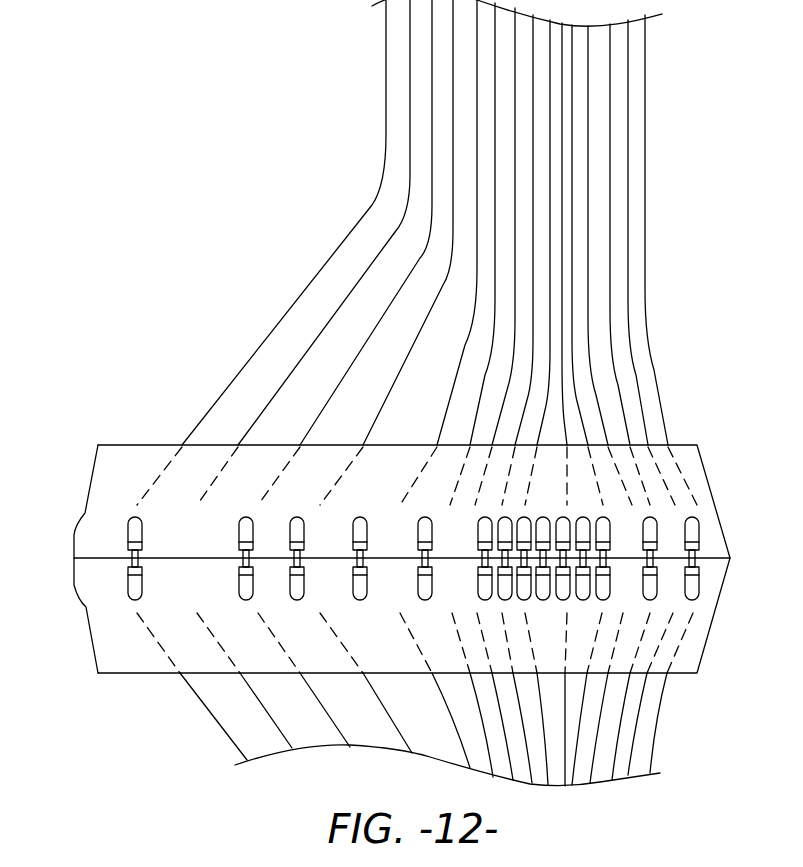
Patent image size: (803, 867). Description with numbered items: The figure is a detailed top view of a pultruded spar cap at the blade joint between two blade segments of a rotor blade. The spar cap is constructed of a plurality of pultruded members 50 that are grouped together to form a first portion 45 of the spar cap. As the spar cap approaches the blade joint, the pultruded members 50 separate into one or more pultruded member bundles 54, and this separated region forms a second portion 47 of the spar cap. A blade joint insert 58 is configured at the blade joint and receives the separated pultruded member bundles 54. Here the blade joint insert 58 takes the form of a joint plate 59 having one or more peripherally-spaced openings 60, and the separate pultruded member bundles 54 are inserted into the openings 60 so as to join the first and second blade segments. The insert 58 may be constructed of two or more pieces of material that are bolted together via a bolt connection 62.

The first portion 45 is at (352, 4).
The second portion 47 is at (672, 160).
The pultruded member 50 is at (645, 117).
The pultruded member bundle 54 is at (262, 340).
The blade joint insert 58 is at (72, 542).
The joint plate 59 is at (90, 482).
The opening 60 is at (148, 470).
The bolt connection 62 is at (608, 582).